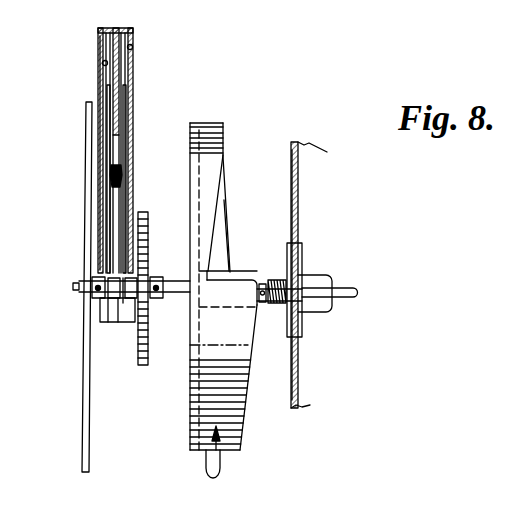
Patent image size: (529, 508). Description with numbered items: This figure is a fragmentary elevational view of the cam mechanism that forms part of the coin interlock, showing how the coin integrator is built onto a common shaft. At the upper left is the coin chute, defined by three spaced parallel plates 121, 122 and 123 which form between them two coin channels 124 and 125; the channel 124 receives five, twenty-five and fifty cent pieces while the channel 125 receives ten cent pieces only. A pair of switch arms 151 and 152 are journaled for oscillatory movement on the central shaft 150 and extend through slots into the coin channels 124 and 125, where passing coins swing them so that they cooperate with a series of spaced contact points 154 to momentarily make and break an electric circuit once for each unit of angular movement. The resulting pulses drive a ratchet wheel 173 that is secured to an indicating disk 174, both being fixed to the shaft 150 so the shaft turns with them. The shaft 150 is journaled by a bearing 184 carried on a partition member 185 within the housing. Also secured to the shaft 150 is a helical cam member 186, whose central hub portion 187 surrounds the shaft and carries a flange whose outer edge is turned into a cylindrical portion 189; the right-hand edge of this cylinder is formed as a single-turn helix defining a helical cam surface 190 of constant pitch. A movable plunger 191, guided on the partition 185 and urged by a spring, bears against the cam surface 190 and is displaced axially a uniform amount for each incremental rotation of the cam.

The plate 121 is at (134, 91).
The plate 122 is at (122, 66).
The plate 123 is at (101, 53).
The coin channel 124 is at (132, 49).
The coin channel 125 is at (104, 70).
The central shaft 150 is at (178, 297).
The switch arm 151 is at (127, 128).
The switch arm 152 is at (108, 118).
The contact points 154 is at (116, 171).
The ratchet wheel 173 is at (149, 218).
The indicating disk 174 is at (86, 192).
The bearing 184 is at (317, 270).
The partition member 185 is at (299, 384).
The helical cam member 186 is at (250, 122).
The central hub portion 187 is at (242, 272).
The cylindrical portion 189 is at (210, 123).
The helical cam surface 190 is at (214, 207).
The movable plunger 191 is at (351, 287).